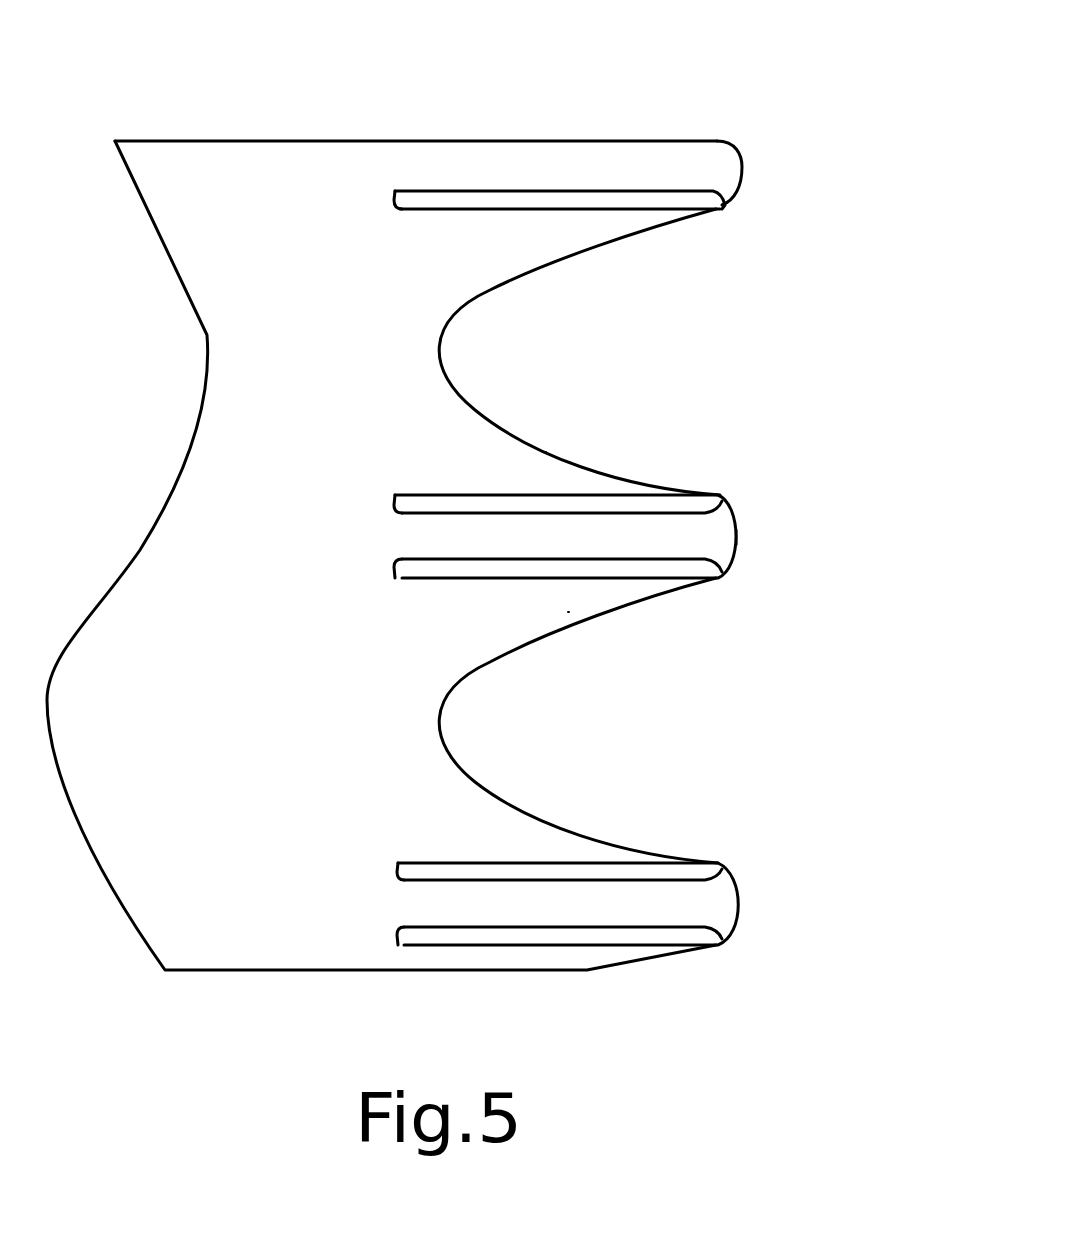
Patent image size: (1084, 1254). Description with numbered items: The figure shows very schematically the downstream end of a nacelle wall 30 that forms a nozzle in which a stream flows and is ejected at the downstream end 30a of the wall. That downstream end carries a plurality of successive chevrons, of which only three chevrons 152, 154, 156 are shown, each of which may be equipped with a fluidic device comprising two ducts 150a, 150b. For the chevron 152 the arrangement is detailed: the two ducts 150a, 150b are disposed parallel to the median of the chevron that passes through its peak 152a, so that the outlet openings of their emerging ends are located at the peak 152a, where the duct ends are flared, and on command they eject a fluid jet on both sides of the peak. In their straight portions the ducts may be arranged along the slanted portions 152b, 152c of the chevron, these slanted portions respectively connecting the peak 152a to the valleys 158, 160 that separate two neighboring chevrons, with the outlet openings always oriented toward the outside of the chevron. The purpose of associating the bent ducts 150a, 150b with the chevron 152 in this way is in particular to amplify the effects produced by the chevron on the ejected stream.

The nacelle wall 30 is at (200, 141).
The downstream end of the wall 30a is at (723, 138).
The chevron 154 is at (766, 169).
The chevron 152 is at (750, 499).
The peak of the chevron 152a is at (740, 534).
The slanted portion of the chevron 152b is at (545, 452).
The slanted portion of the chevron 152c is at (568, 612).
The chevron 156 is at (768, 898).
The valley 158 is at (480, 352).
The valley 160 is at (478, 716).
The duct 150a is at (396, 496).
The duct 150b is at (401, 211).